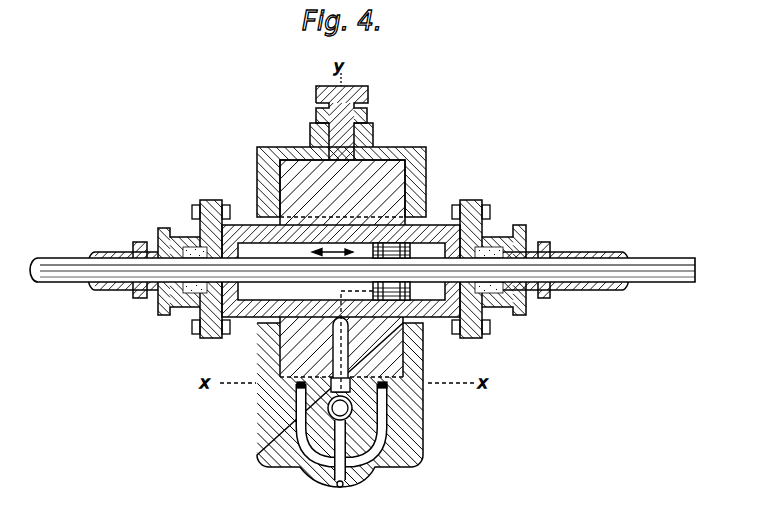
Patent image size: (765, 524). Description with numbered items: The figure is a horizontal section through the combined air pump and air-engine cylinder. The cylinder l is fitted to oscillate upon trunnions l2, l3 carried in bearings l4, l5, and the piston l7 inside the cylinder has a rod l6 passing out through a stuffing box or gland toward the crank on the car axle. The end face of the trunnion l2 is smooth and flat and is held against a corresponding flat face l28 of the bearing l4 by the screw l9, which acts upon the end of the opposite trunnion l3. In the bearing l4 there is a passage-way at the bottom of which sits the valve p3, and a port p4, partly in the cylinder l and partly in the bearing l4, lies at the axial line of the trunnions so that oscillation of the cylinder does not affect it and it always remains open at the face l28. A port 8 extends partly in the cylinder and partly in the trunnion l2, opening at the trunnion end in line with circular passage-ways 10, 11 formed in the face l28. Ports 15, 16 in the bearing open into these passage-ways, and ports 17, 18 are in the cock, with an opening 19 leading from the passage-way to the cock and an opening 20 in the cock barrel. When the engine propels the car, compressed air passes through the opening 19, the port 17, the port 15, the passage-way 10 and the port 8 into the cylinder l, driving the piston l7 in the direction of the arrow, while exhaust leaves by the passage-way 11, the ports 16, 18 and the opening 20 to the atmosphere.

The cylinder l is at (252, 226).
The trunnion l2 is at (290, 352).
The trunnion l3 is at (300, 200).
The bearing l4 is at (350, 405).
The bearing l5 is at (355, 170).
The piston rod l6 is at (73, 244).
The piston l7 is at (382, 288).
The screw l9 is at (369, 96).
The face of the bearing l28 is at (297, 386).
The valve p3 is at (330, 415).
The port p4 is at (338, 344).
The port 8 is at (420, 290).
The passage-way 10 is at (383, 388).
The passage-way 11 is at (298, 400).
The port 15 is at (384, 427).
The port 16 is at (300, 410).
The port 17 is at (372, 466).
The port 18 is at (326, 470).
The opening 19 is at (297, 450).
The opening 20 is at (340, 484).